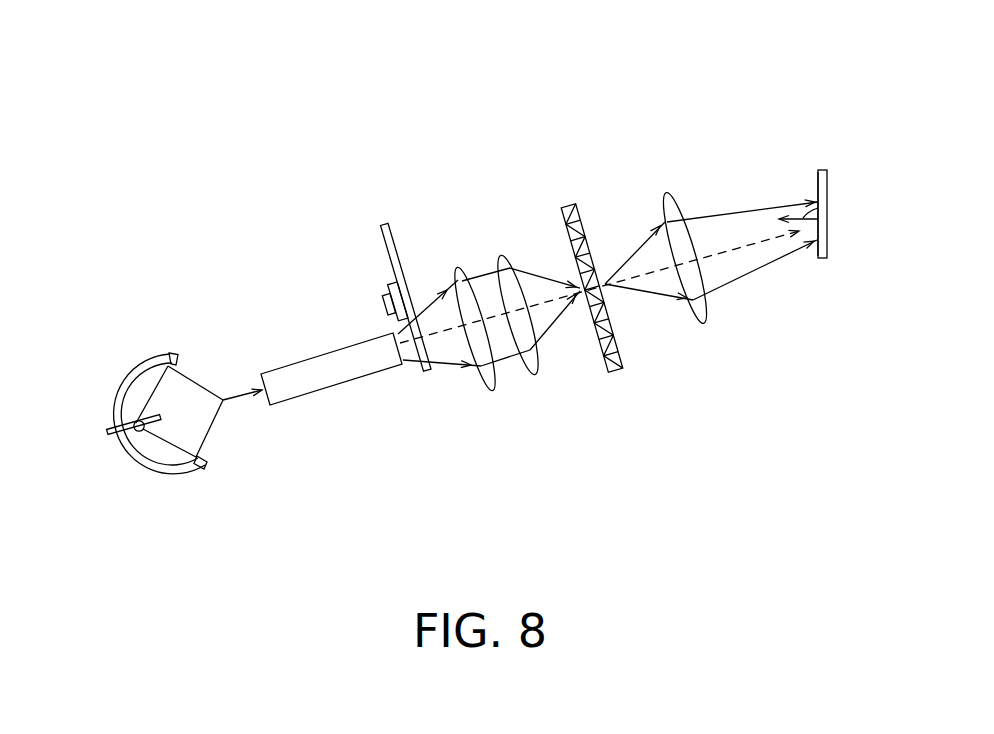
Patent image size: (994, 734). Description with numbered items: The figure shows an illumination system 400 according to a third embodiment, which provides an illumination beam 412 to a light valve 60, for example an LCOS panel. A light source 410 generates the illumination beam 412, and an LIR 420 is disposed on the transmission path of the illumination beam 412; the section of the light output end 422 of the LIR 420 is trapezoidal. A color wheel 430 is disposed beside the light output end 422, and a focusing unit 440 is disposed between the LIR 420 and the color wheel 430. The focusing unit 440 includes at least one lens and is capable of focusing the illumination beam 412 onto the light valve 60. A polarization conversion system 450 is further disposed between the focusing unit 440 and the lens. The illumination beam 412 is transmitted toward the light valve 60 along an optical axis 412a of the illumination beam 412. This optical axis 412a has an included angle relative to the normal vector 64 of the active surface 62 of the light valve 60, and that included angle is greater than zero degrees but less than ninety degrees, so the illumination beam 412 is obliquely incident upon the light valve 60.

The illumination system 400 is at (486, 292).
The light source 410 is at (165, 445).
The illumination beam 412 is at (508, 300).
The optical axis 412a is at (609, 287).
The LIR 420 is at (331, 405).
The light output end 422 is at (417, 374).
The color wheel 430 is at (416, 274).
The focusing unit 440 is at (594, 332).
The polarization conversion system 450 is at (602, 258).
The light valve 60 is at (833, 246).
The active surface 62 is at (799, 182).
The normal vector 64 is at (821, 208).